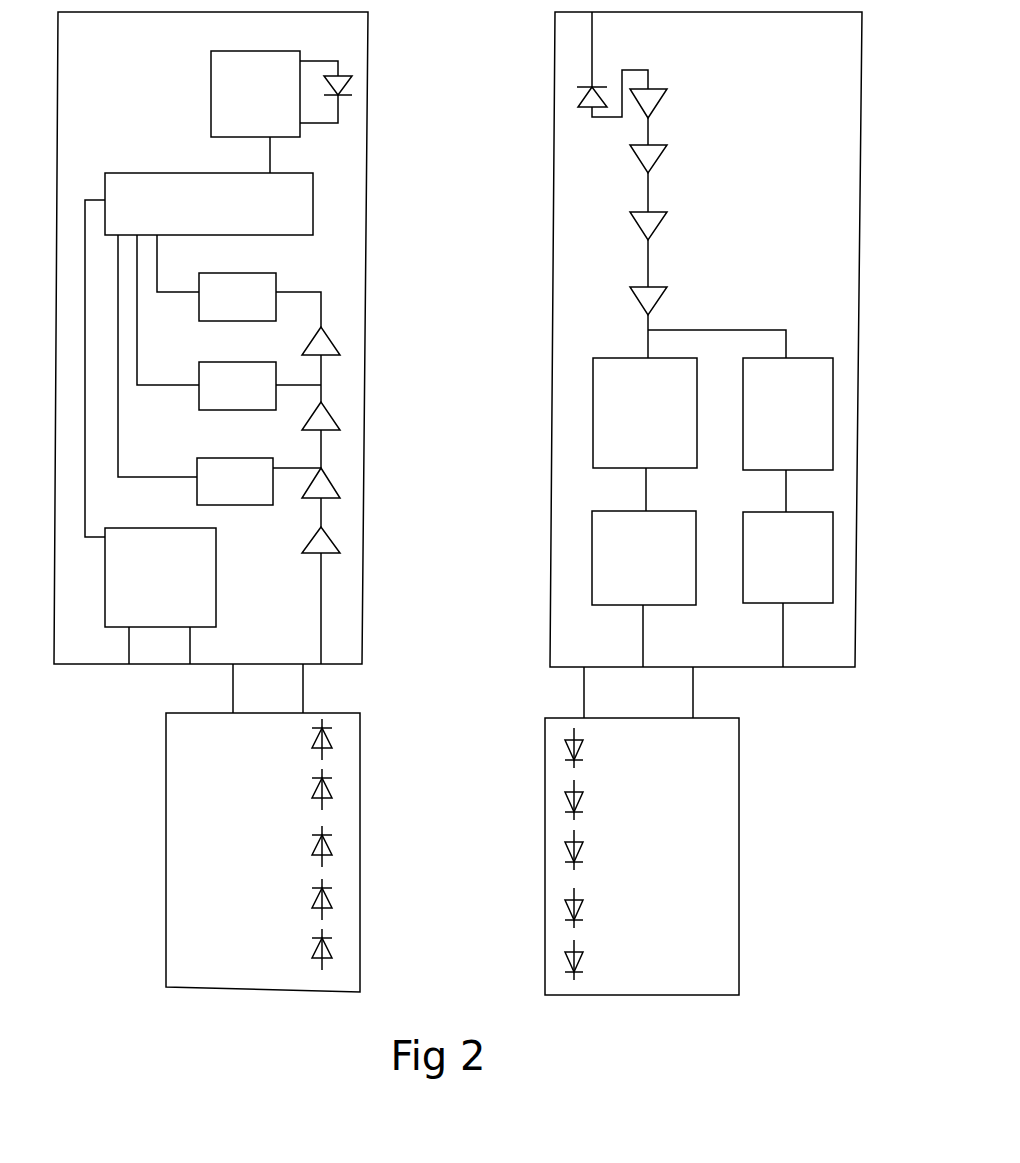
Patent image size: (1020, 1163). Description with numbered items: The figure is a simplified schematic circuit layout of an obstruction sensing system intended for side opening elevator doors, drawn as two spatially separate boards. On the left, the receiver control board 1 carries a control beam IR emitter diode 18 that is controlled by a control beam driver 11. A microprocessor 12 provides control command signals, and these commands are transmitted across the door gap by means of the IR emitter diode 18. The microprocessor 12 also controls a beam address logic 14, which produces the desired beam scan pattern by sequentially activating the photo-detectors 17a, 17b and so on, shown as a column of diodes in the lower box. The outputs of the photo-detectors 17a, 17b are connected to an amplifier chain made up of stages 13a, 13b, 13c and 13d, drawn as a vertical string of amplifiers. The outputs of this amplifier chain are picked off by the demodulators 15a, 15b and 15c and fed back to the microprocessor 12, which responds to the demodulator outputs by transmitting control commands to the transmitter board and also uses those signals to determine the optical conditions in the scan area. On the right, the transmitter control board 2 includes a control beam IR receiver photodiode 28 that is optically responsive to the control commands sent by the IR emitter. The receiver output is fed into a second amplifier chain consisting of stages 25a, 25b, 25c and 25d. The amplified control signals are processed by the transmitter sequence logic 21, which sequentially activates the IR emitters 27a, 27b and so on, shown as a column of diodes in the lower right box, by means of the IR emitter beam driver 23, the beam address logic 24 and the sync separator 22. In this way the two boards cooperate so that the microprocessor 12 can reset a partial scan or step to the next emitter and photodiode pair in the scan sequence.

The receiver control board 1 is at (225, 332).
The transmitter control board 2 is at (727, 337).
The control beam driver 11 is at (255, 94).
The microprocessor 12 is at (209, 204).
The amplifier chain stage 13a is at (363, 334).
The amplifier chain stage 13b is at (366, 409).
The amplifier chain stage 13c is at (365, 482).
The amplifier chain stage 13d is at (367, 546).
The beam address logic 14 is at (160, 577).
The demodulator 15a is at (237, 297).
The demodulator 15b is at (237, 386).
The demodulator 15c is at (235, 481).
The photo-detector 17a is at (292, 741).
The photo-detector 17b is at (292, 793).
The control beam IR emitter diode 18 is at (360, 92).
The transmitter sequence logic 21 is at (645, 413).
The sync separator 22 is at (788, 414).
The IR emitter beam driver 23 is at (644, 558).
The beam address logic 24 is at (788, 557).
The amplifier chain stage 25a is at (683, 106).
The amplifier chain stage 25b is at (685, 162).
The amplifier chain stage 25c is at (687, 229).
The amplifier chain stage 25d is at (687, 302).
The IR emitter 27a is at (614, 750).
The IR emitter 27b is at (614, 803).
The control beam IR receiver photodiode 28 is at (579, 64).